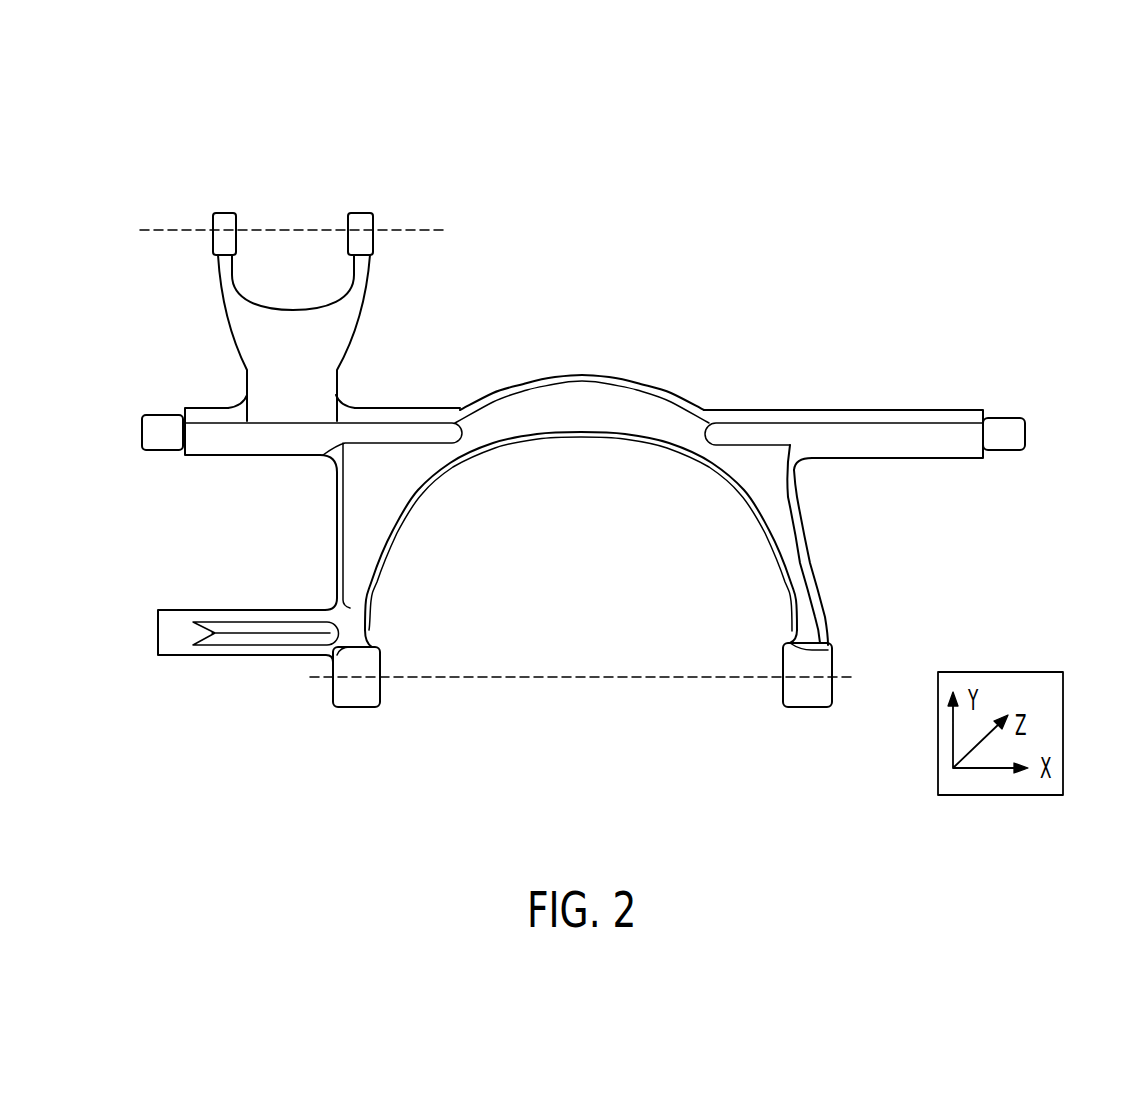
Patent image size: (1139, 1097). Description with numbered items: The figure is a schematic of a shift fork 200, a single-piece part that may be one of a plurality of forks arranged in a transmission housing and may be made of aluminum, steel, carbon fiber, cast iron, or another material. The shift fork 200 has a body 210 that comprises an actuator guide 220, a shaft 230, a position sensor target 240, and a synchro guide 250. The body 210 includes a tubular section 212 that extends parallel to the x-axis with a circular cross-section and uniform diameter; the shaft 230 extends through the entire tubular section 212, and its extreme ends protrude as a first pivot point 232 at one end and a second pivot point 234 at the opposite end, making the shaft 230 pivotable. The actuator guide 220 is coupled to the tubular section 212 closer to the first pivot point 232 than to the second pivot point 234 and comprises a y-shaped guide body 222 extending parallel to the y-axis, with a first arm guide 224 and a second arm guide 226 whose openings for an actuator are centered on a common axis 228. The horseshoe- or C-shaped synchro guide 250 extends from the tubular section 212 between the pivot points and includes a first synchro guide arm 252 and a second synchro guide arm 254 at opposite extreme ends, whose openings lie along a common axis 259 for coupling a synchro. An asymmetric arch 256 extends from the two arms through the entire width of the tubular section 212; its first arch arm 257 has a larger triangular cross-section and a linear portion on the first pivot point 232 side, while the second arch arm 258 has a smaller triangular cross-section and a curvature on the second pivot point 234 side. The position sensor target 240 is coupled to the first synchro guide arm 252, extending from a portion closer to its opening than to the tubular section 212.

The shift fork 200 is at (1062, 158).
The body 210 is at (793, 263).
The tubular section 212 is at (818, 410).
The actuator guide 220 is at (238, 190).
The guide body 222 is at (325, 377).
The first arm guide 224 is at (222, 258).
The second arm guide 226 is at (368, 257).
The common axis 228 is at (170, 228).
The shaft 230 is at (133, 390).
The first pivot point 232 is at (168, 429).
The second pivot point 234 is at (1005, 440).
The position sensor target 240 is at (148, 633).
The synchro guide 250 is at (418, 738).
The first synchro guide arm 252 is at (358, 705).
The second synchro guide arm 254 is at (812, 710).
The arch 256 is at (575, 383).
The first arch arm 257 is at (342, 533).
The second arch arm 258 is at (815, 540).
The common axis 259 is at (730, 675).